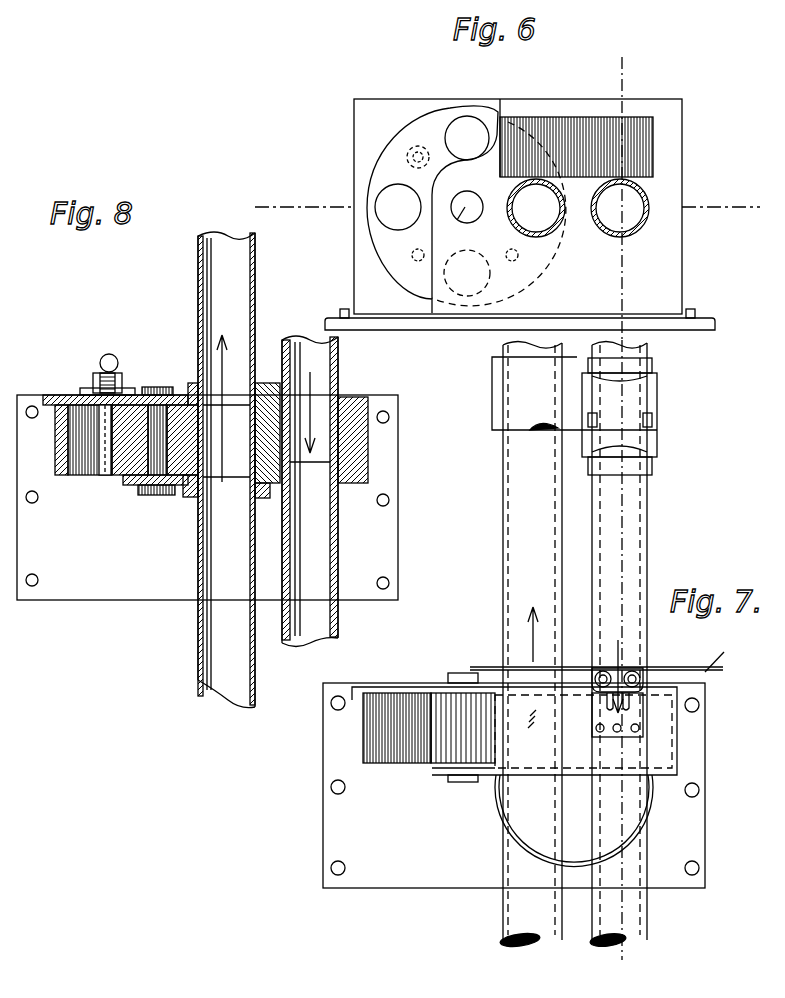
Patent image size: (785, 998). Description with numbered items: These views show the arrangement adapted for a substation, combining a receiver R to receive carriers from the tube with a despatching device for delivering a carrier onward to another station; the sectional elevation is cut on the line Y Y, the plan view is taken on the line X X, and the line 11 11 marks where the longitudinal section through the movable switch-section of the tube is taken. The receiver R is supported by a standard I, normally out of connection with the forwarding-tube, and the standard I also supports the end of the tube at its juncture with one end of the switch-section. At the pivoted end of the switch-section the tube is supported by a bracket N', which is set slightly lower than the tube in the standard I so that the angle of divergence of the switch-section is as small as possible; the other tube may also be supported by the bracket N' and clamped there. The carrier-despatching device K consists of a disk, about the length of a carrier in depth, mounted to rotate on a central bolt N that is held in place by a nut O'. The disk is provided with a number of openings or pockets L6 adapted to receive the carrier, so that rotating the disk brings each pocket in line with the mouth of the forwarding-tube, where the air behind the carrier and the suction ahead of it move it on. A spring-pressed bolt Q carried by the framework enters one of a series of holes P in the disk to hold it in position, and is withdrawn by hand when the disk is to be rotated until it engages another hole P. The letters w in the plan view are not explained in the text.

In FIG. 6, the section line 11 11 is at (624, 185).
In FIG. 7, the section line 11 11 is at (620, 663).
In FIG. 6, the holes P is at (418, 150).
In FIG. 8, the holes P is at (103, 418).
In FIG. 6, the receiver R is at (586, 118).
In FIG. 7, the receiver R is at (512, 838).
In FIG. 6, the carrier-despatching device K is at (372, 252).
In FIG. 7, the carrier-despatching device K is at (365, 737).
In FIG. 8, the carrier-despatching device K is at (55, 447).
In FIG. 6, the openings or pockets L6 is at (432, 173).
In FIG. 7, the openings or pockets L6 is at (423, 750).
In FIG. 8, the openings or pockets L6 is at (108, 470).
In FIG. 6, the nut O' is at (464, 222).
In FIG. 7, the nut O' is at (465, 664).
In FIG. 8, the nut O' is at (157, 377).
In FIG. 6, the standard I is at (682, 287).
In FIG. 7, the standard I is at (655, 775).
In FIG. 8, the standard I is at (207, 497).
In FIG. 6, the section line Y Y is at (514, 204).
In FIG. 7, the central bolt N is at (463, 791).
In FIG. 8, the central bolt N is at (156, 510).
In FIG. 7, the bracket N' is at (640, 416).
In FIG. 7, the section line X X is at (607, 658).
In FIG. 7, the eyelets w is at (598, 668).
In FIG. 8, the spring-pressed bolt Q is at (107, 364).